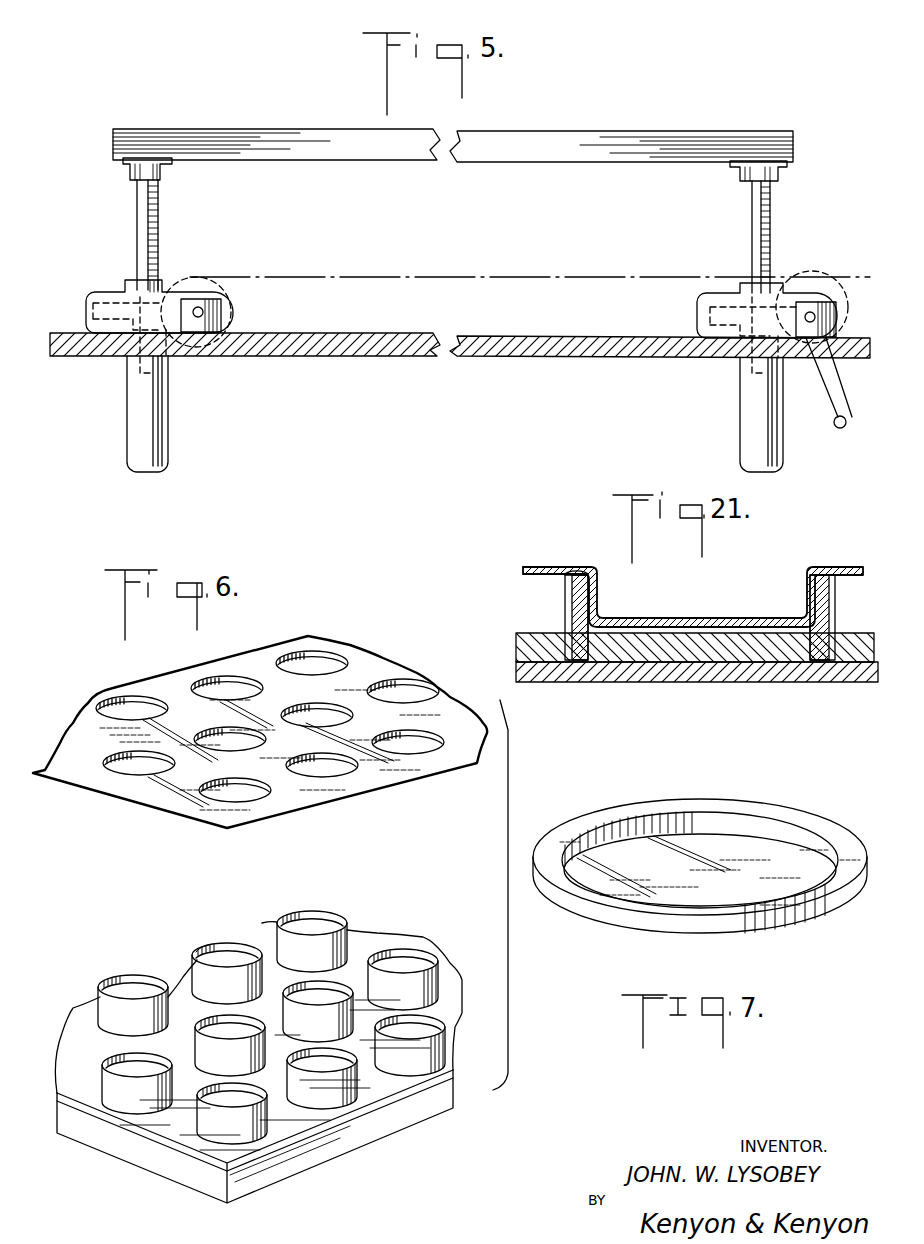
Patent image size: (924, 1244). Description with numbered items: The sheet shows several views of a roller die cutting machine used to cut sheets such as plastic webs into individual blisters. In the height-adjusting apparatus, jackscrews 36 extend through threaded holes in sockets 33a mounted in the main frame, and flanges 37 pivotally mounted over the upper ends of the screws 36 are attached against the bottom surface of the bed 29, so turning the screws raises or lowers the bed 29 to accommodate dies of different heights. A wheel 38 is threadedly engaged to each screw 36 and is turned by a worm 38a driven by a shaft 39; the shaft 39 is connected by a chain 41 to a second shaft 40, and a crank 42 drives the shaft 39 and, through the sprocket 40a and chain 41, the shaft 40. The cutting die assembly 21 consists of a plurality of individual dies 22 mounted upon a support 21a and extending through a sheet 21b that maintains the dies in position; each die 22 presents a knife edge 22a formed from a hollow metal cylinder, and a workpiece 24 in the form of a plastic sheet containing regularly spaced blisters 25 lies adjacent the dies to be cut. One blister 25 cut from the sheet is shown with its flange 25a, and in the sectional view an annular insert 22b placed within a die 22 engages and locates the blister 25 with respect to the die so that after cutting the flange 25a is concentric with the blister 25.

In FIG. 5, the bed 29 is at (117, 140).
In FIG. 5, the flange 37 is at (125, 168).
In FIG. 5, the jackscrew 36 is at (150, 228).
In FIG. 5, the wheel 38 is at (100, 302).
In FIG. 5, the worm 38a is at (186, 290).
In FIG. 5, the chain 41 is at (240, 277).
In FIG. 5, the shaft 39 is at (194, 318).
In FIG. 5, the socket 33a is at (135, 426).
In FIG. 5, the shaft 40 is at (823, 300).
In FIG. 5, the sprocket 40a is at (820, 447).
In FIG. 5, the crank 42 is at (829, 406).
In FIG. 6, the workpiece 24 is at (170, 808).
In FIG. 6, the blister 25 is at (135, 706).
In FIG. 21, the blister 25 is at (780, 599).
In FIG. 7, the blister 25 is at (718, 768).
In FIG. 21, the flange 25a is at (585, 570).
In FIG. 7, the flange 25a is at (595, 820).
In FIG. 6, the die 22 is at (330, 915).
In FIG. 21, the die 22 is at (565, 615).
In FIG. 6, the knife edge 22a is at (217, 938).
In FIG. 21, the insert 22b is at (565, 592).
In FIG. 6, the cutting die assembly 21 is at (139, 1160).
In FIG. 21, the support 21a is at (860, 683).
In FIG. 6, the sheet 21b is at (453, 1073).
In FIG. 21, the sheet 21b is at (867, 637).